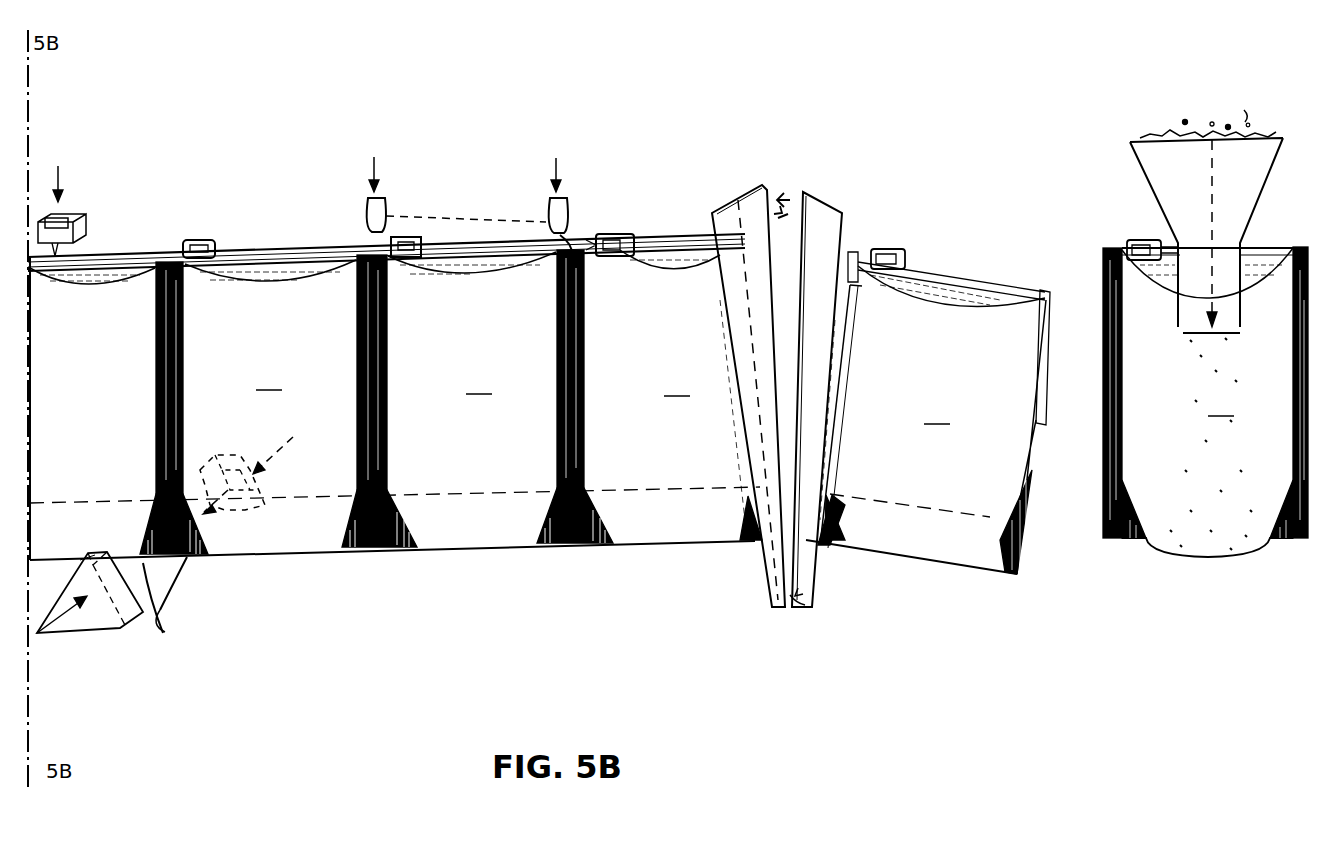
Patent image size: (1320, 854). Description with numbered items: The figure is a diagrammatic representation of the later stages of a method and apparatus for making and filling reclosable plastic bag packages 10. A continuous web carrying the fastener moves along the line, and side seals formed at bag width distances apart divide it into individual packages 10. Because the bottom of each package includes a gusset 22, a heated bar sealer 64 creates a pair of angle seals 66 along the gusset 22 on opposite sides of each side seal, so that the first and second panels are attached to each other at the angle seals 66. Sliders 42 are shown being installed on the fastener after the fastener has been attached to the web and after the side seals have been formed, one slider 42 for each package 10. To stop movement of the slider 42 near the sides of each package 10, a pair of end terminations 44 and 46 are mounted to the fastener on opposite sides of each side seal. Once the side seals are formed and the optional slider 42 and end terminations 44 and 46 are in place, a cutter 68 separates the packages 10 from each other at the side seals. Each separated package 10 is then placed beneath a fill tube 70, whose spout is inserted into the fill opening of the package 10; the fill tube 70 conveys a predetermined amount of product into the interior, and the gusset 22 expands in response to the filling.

The package 10 is at (669, 410).
The gusset 22 is at (297, 490).
The slider 42 is at (70, 214).
The end termination 44 is at (387, 200).
The end termination 46 is at (560, 205).
The heated bar sealer 64 is at (108, 620).
The angle seal 66 is at (165, 619).
The cutter 68 is at (772, 591).
The fill tube 70 is at (1246, 164).